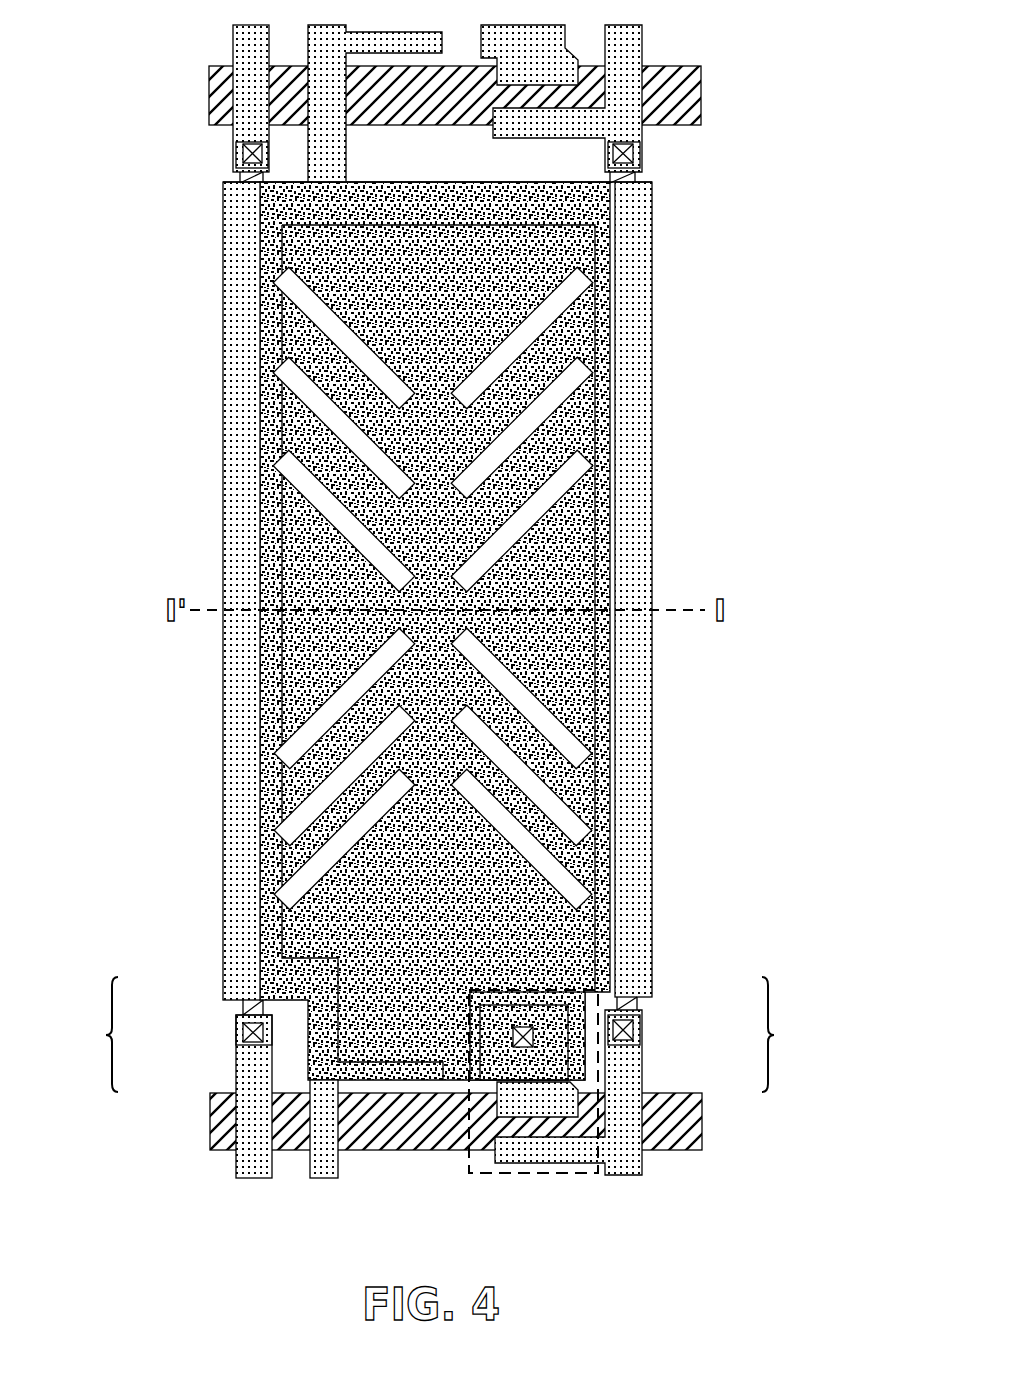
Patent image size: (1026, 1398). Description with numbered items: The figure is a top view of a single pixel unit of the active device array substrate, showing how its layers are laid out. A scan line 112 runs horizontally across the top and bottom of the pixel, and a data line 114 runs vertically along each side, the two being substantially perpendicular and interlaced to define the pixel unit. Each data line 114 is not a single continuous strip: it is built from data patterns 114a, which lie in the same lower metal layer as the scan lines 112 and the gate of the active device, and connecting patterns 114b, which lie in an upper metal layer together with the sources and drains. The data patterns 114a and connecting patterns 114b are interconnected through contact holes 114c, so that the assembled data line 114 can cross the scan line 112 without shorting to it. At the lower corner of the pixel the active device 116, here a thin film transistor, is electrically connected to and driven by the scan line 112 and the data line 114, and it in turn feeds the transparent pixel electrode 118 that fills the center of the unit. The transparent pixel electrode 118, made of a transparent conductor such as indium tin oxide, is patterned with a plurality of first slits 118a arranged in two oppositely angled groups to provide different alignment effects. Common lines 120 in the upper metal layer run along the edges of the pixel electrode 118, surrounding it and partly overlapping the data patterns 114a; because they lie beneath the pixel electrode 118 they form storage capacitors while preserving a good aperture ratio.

The scan line 112 is at (700, 95).
The data line 114 is at (439, 1034).
The data pattern 114a is at (242, 1010).
The connecting pattern 114b is at (233, 45).
The contact hole 114c is at (236, 148).
The active device 116 is at (551, 1177).
The transparent pixel electrode 118 is at (620, 243).
The first slit 118a is at (545, 323).
The common line 120 is at (640, 483).